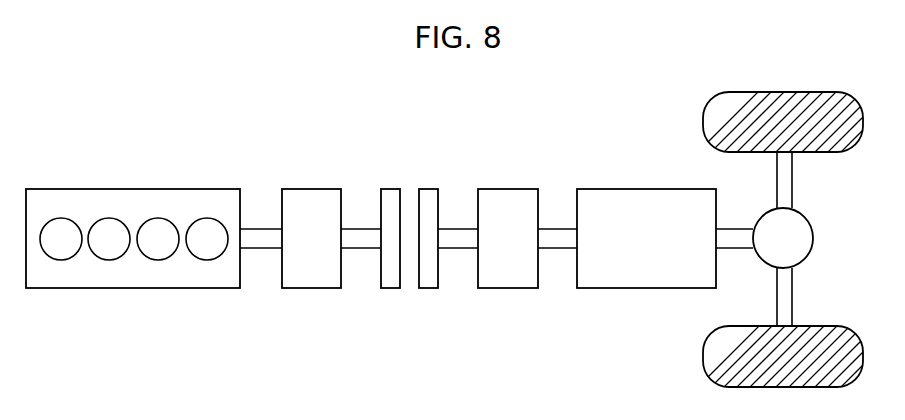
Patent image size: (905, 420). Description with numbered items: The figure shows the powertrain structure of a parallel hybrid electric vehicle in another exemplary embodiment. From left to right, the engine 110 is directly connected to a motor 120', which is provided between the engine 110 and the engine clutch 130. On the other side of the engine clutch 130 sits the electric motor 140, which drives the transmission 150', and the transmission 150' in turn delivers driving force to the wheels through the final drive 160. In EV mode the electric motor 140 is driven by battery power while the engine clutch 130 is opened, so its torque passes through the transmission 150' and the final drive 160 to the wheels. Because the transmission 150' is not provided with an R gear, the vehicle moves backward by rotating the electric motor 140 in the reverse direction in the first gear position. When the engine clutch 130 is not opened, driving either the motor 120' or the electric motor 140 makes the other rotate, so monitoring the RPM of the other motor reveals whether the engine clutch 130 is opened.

The engine 110 is at (205, 187).
The motor 120' is at (331, 224).
The engine clutch 130 is at (432, 186).
The electric motor 140 is at (513, 186).
The transmission 150' is at (659, 224).
The final drive 160 is at (813, 222).